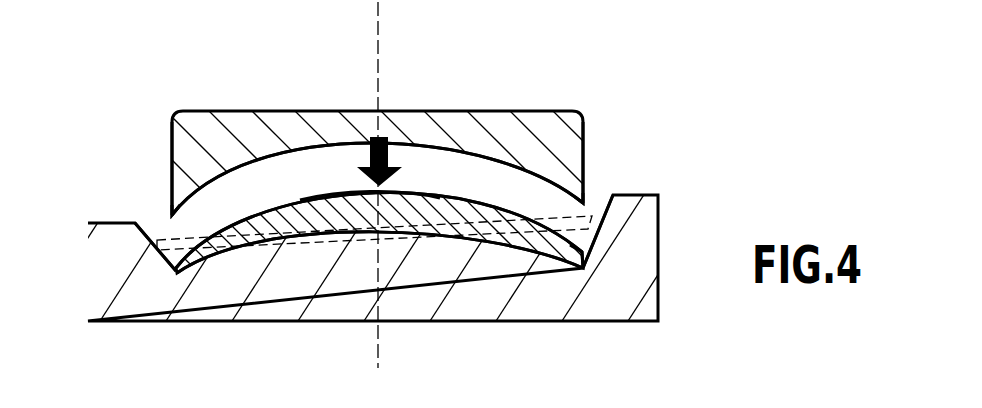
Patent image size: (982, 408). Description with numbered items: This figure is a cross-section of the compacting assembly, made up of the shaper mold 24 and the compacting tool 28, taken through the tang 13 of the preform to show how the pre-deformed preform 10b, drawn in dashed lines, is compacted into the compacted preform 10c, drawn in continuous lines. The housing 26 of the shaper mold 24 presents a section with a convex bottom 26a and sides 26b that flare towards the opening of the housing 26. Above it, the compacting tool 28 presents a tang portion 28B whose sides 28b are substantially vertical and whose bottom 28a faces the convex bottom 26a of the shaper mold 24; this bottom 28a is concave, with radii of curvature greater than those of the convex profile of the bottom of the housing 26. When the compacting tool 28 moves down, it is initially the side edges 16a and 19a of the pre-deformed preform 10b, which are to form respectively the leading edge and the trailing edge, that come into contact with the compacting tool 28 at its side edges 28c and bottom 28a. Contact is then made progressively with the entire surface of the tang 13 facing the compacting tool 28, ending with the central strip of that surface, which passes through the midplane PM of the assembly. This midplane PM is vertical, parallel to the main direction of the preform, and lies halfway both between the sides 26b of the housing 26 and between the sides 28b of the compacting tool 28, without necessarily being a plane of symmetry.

The midplane PM is at (380, 50).
The compacting tool 28 is at (548, 92).
The tang portion 28B is at (212, 128).
The bottom 28a is at (468, 163).
The sides 28b is at (162, 147).
The side edges 28c is at (173, 214).
The housing 26 is at (520, 182).
The convex bottom 26a is at (483, 222).
The sides 26b is at (605, 200).
The tang 13 is at (352, 213).
The compacted preform 10c is at (323, 186).
The pre-deformed preform 10b is at (164, 224).
The shaper mold 24 is at (645, 221).
The side edge 16a is at (603, 215).
The side edge 19a is at (156, 262).